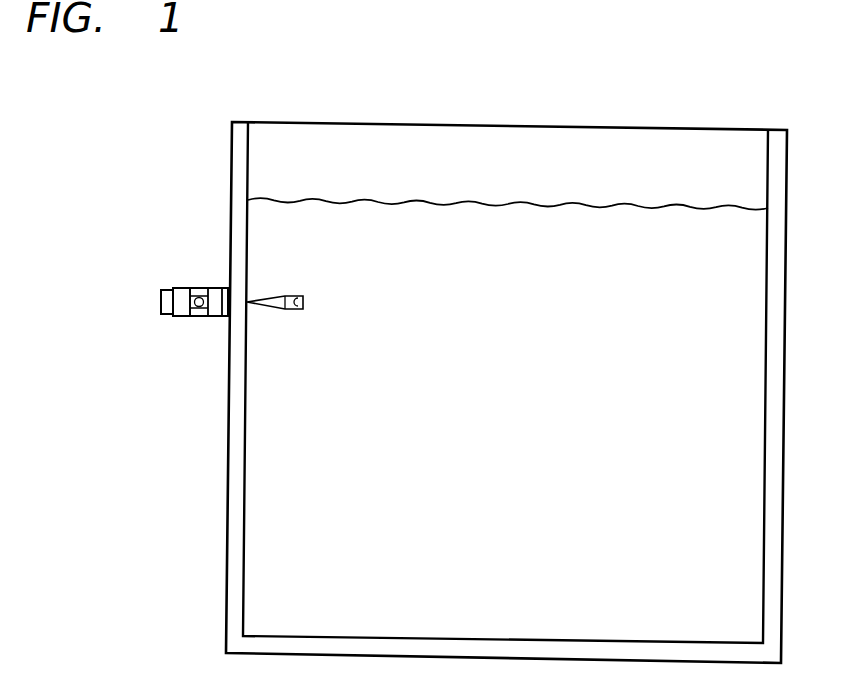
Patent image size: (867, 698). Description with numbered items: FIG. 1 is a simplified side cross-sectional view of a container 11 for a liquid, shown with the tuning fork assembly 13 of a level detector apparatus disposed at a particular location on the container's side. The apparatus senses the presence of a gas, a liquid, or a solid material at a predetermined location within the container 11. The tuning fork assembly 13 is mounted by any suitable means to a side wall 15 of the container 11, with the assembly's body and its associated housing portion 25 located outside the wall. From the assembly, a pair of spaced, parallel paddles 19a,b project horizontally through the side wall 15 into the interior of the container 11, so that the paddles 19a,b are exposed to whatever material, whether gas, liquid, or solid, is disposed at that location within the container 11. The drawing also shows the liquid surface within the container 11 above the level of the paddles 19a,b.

The container 11 is at (227, 497).
The tuning fork assembly 13 is at (181, 332).
The side wall 15 is at (235, 576).
The paddles 19a,b is at (303, 300).
The sensor body 25 is at (183, 295).